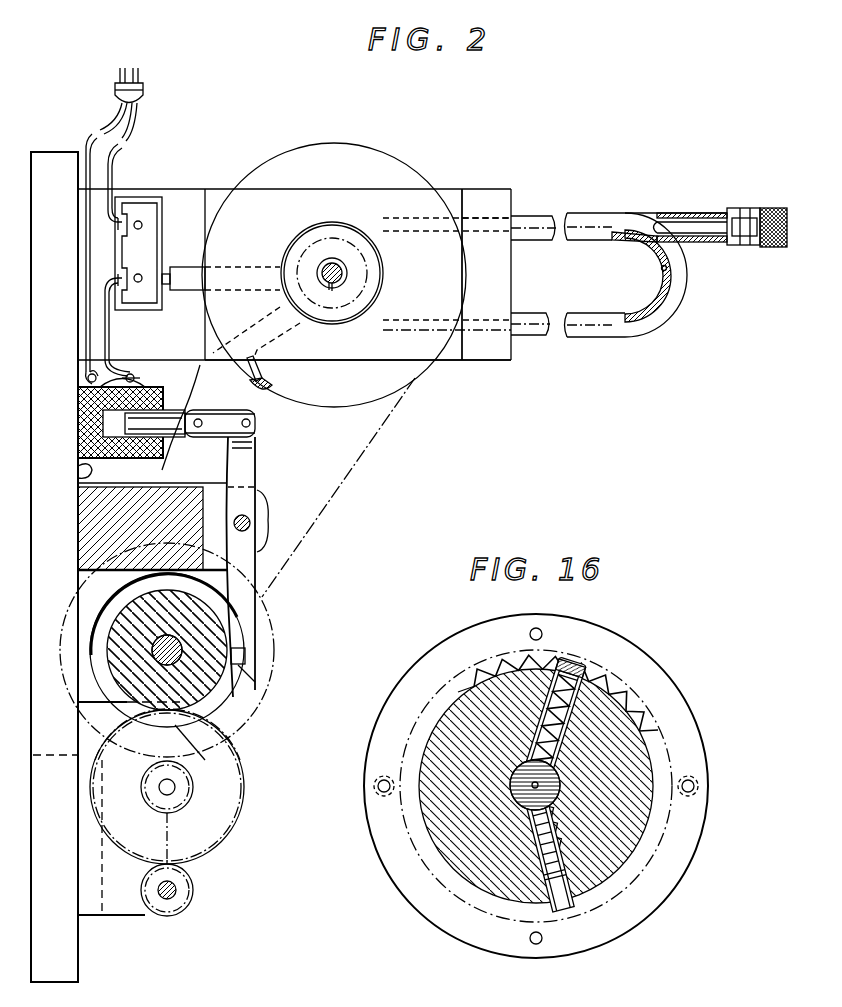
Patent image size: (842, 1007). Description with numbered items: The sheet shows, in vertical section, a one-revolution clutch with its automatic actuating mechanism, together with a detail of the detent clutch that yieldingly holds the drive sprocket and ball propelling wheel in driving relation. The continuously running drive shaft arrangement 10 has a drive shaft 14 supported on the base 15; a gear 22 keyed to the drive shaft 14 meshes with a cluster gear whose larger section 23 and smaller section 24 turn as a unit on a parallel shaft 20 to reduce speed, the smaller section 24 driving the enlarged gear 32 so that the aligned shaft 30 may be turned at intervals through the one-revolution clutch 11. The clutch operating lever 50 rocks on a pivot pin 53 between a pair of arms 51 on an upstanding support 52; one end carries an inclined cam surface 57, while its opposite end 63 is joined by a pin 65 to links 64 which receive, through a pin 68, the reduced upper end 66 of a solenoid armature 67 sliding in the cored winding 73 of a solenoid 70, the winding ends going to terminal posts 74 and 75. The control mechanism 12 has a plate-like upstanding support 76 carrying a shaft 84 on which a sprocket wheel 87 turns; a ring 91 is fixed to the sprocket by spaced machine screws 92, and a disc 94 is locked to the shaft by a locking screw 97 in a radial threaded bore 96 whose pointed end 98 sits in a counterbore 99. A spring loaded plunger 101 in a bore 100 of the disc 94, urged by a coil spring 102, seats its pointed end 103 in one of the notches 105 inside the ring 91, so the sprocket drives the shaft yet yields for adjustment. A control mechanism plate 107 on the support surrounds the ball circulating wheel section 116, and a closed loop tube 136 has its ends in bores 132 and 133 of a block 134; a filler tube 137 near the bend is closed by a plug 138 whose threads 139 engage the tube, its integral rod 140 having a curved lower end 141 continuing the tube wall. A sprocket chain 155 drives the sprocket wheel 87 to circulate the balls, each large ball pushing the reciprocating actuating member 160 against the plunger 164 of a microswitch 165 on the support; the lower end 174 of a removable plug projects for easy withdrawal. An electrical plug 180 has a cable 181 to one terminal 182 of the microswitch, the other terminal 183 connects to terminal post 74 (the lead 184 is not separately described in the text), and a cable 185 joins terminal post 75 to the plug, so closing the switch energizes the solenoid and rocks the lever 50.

In FIG. 2, the drive shaft arrangement 10 is at (248, 838).
In FIG. 2, the one-revolution clutch 11 is at (288, 659).
In FIG. 2, the control mechanism 12 is at (441, 375).
In FIG. 2, the drive shaft 14 is at (170, 897).
In FIG. 2, the base 15 is at (60, 945).
In FIG. 2, the shaft 20 is at (178, 787).
In FIG. 2, the gear 22 is at (194, 894).
In FIG. 2, the cluster gear section of increased diameter 23 is at (233, 845).
In FIG. 2, the gear section of reduced diameter 24 is at (200, 778).
In FIG. 2, the shaft 30 is at (160, 646).
In FIG. 2, the enlarged gear 32 is at (258, 702).
In FIG. 2, the clutch operating lever 50 is at (262, 576).
In FIG. 2, the arms 51 is at (262, 522).
In FIG. 2, the upstanding support 52 is at (85, 522).
In FIG. 2, the pivot pin 53 is at (252, 520).
In FIG. 2, the inclined cam surface 57 is at (248, 660).
In FIG. 2, the opposite end of lever 63 is at (250, 480).
In FIG. 2, the links 64 is at (214, 439).
In FIG. 2, the pin 65 is at (246, 419).
In FIG. 2, the reduced upper end of solenoid armature 66 is at (152, 438).
In FIG. 2, the solenoid armature 67 is at (170, 365).
In FIG. 2, the pin 68 is at (198, 417).
In FIG. 2, the solenoid 70 is at (80, 475).
In FIG. 2, the winding 73 is at (80, 400).
In FIG. 2, the terminal post 74 is at (133, 372).
In FIG. 2, the terminal post 75 is at (88, 372).
In FIG. 2, the upstanding support 76 is at (185, 205).
In FIG. 16, the shaft 84 is at (559, 794).
In FIG. 2, the sprocket wheel 87 is at (400, 168).
In FIG. 16, the ring 91 is at (650, 895).
In FIG. 16, the machine screws 92 is at (376, 786).
In FIG. 16, the disc 94 is at (625, 756).
In FIG. 16, the radial threaded bore 96 is at (515, 885).
In FIG. 16, the locking screw 97 is at (520, 830).
In FIG. 16, the pointed end 98 is at (546, 820).
In FIG. 16, the counterbore 99 is at (512, 789).
In FIG. 16, the bore 100 is at (585, 716).
In FIG. 16, the spring loaded plunger 101 is at (580, 665).
In FIG. 16, the coil spring 102 is at (535, 752).
In FIG. 16, the pointed end 103 is at (565, 660).
In FIG. 16, the notches 105 is at (478, 672).
In FIG. 2, the control mechanism plate 107 is at (345, 354).
In FIG. 2, the ball circulating wheel section 116 is at (372, 280).
In FIG. 2, the bore 132 is at (473, 215).
In FIG. 2, the bore 133 is at (505, 360).
In FIG. 2, the block 134 is at (498, 292).
In FIG. 2, the closed loop tube 136 is at (672, 318).
In FIG. 2, the filler tube 137 is at (690, 244).
In FIG. 2, the closure plug 138 is at (778, 208).
In FIG. 2, the external threads 139 is at (746, 208).
In FIG. 2, the rod 140 is at (700, 213).
In FIG. 2, the curved lower end 141 is at (640, 223).
In FIG. 2, the sprocket chain 155 is at (356, 470).
In FIG. 2, the reciprocating actuating member 160 is at (206, 278).
In FIG. 2, the microswitch plunger 164 is at (168, 272).
In FIG. 2, the microswitch 165 is at (138, 205).
In FIG. 2, the lower end of plug 174 is at (275, 398).
In FIG. 2, the electrical plug 180 is at (114, 90).
In FIG. 2, the cable 181 is at (88, 152).
In FIG. 2, the terminal 182 is at (116, 225).
In FIG. 2, the terminal 183 is at (116, 278).
In FIG. 2, the wire 184 is at (105, 315).
In FIG. 2, the cable 185 is at (86, 180).